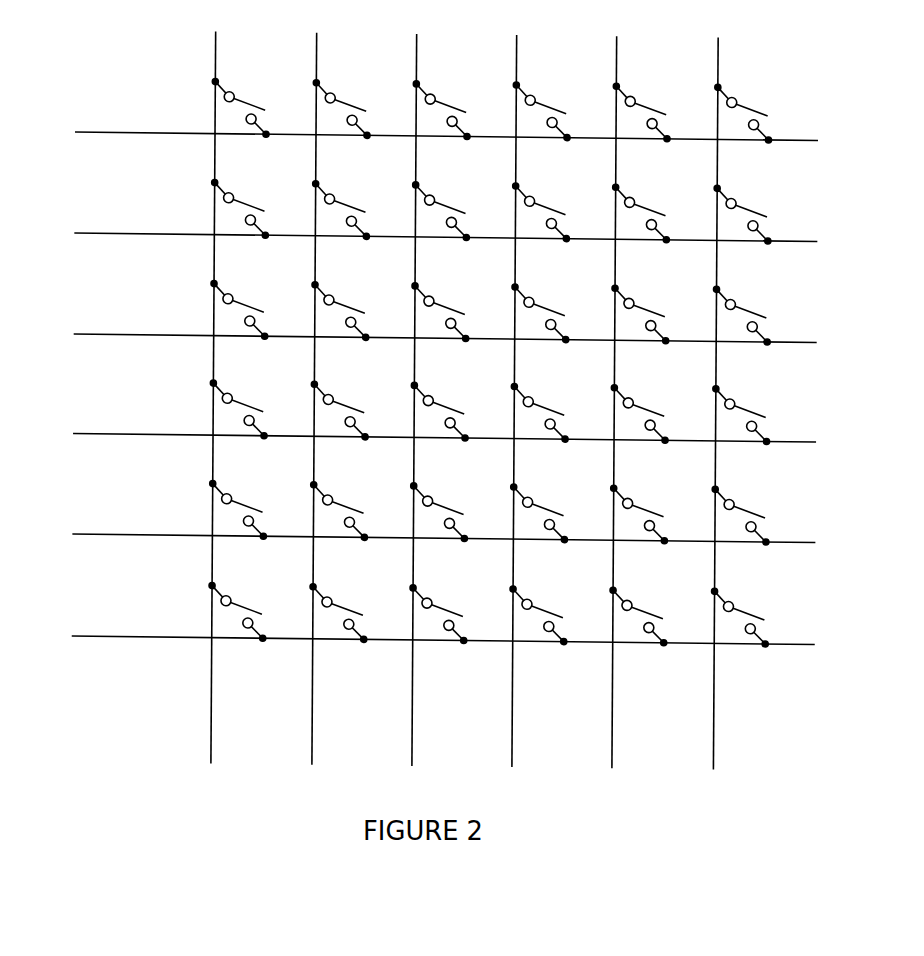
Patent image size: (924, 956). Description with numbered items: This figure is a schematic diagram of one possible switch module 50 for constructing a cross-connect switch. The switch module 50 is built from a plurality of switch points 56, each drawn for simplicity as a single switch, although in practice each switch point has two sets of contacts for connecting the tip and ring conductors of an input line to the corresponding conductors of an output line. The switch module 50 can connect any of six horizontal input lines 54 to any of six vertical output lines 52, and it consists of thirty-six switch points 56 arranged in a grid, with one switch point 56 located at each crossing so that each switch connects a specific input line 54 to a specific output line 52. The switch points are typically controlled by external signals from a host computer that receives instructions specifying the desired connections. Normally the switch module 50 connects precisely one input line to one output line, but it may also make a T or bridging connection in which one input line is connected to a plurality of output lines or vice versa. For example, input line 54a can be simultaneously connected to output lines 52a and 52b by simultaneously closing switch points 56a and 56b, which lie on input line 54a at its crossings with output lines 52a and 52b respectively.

The switch module 50 is at (494, 442).
The output line 52 is at (196, 723).
The output line 52a is at (428, 740).
The output line 52b is at (526, 750).
The input line 54 is at (136, 118).
The input line 54a is at (140, 317).
The switch point 56 is at (830, 302).
The switch point 56a is at (452, 286).
The switch point 56b is at (564, 277).